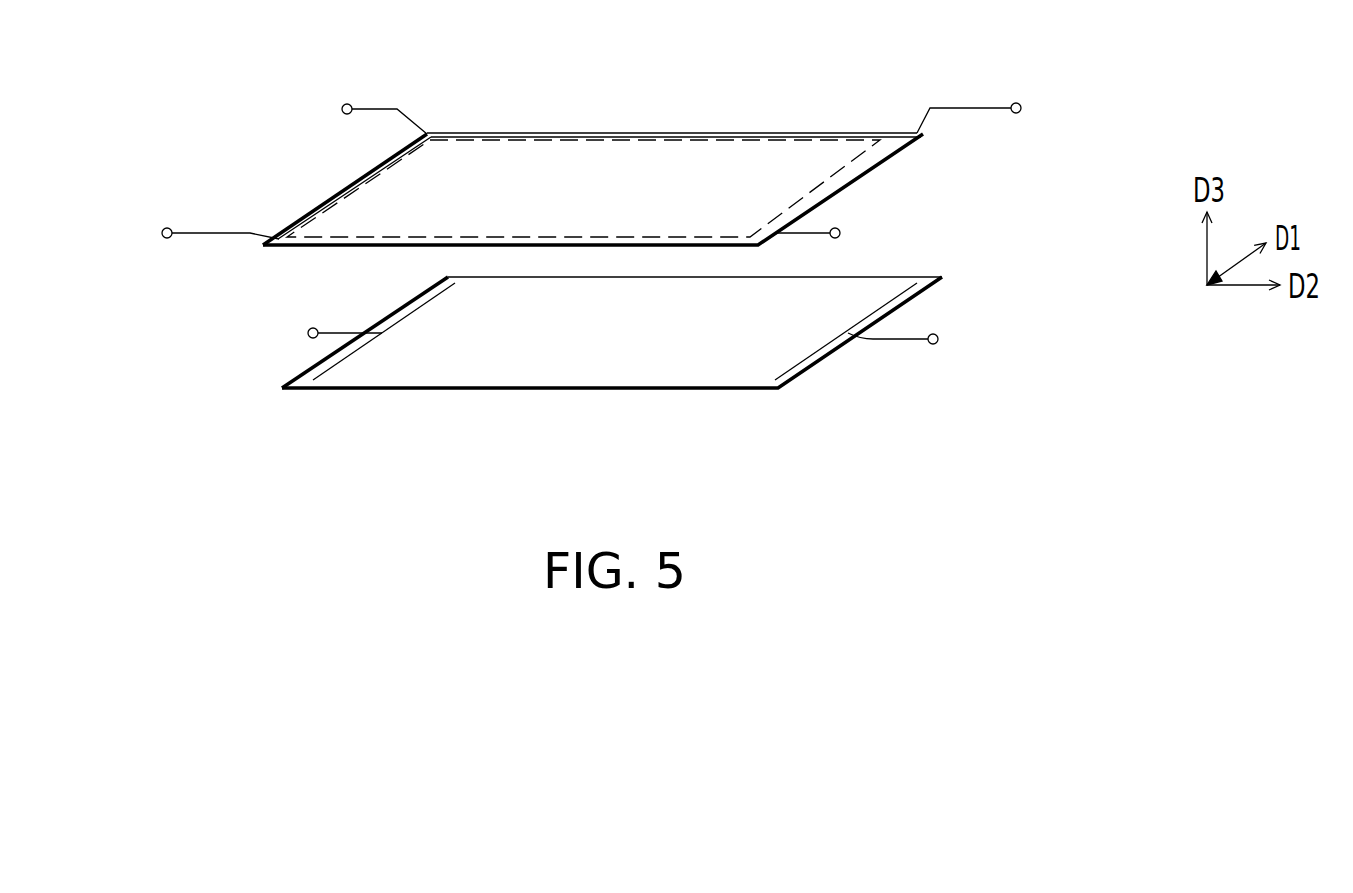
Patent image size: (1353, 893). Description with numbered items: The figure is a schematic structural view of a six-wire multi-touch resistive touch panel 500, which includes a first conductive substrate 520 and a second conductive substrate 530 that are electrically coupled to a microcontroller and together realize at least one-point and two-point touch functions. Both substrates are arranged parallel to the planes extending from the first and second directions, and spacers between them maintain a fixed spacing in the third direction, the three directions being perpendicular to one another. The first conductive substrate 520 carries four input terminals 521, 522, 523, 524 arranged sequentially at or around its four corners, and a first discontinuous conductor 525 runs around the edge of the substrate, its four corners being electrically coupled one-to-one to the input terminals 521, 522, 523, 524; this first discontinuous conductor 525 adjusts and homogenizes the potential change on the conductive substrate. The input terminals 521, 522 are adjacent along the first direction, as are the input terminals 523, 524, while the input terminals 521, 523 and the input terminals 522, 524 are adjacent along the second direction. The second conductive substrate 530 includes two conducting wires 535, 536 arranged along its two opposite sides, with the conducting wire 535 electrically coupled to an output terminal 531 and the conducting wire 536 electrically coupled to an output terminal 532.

The multi-touch resistive touch panel 500 is at (1198, 470).
The first conductive substrate 520 is at (573, 134).
The input terminal 521 is at (160, 229).
The input terminal 522 is at (342, 106).
The input terminal 523 is at (841, 236).
The input terminal 524 is at (1017, 101).
The first discontinuous conductor 525 is at (567, 134).
The second conductive substrate 530 is at (615, 355).
The output terminal 531 is at (306, 332).
The output terminal 532 is at (940, 343).
The conducting wire 535 is at (423, 304).
The conducting wire 536 is at (893, 300).